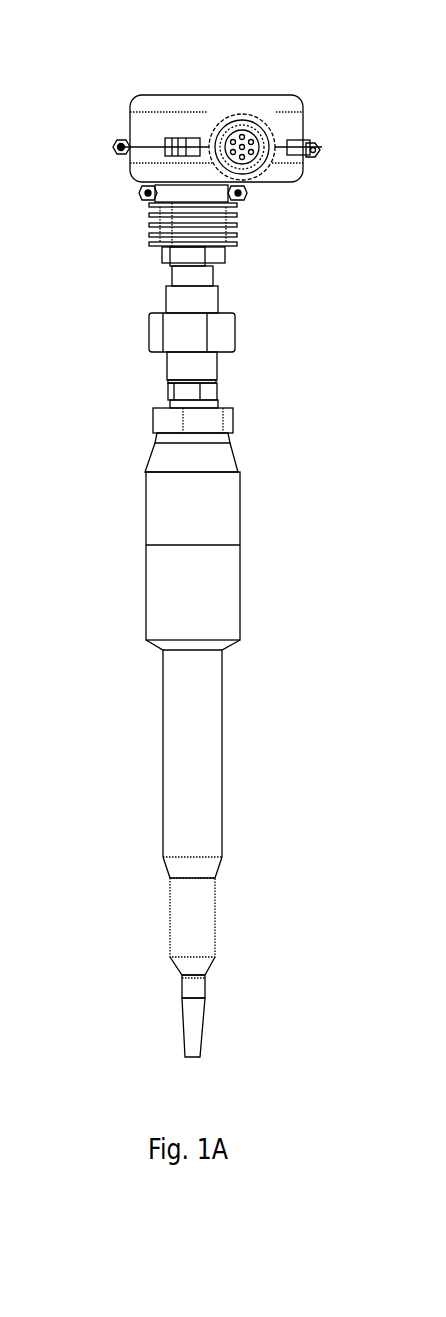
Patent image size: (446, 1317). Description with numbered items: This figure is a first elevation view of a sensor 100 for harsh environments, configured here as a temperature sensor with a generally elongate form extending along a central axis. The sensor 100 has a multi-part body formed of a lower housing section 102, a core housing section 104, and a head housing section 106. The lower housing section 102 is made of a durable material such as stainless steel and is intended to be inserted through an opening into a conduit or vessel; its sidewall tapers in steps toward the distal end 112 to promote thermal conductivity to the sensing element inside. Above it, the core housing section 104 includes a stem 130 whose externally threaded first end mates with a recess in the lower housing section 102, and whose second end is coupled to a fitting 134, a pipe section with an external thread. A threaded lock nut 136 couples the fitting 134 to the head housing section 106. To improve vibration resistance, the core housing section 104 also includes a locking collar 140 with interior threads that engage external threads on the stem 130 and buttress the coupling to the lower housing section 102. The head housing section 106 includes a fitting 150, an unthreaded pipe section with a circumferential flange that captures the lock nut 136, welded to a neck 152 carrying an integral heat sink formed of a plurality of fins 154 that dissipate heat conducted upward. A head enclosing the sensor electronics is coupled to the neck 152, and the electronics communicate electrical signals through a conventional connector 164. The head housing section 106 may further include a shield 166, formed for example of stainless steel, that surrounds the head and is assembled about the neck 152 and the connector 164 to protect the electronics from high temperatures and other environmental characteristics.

The sensor 100 is at (166, 62).
The lower housing section 102 is at (130, 545).
The core housing section 104 is at (130, 332).
The head housing section 106 is at (130, 95).
The distal end 112 is at (203, 1053).
The stem 130 is at (217, 396).
The fitting 134 is at (217, 365).
The lock nut 136 is at (236, 340).
The locking collar 140 is at (240, 484).
The fitting 150 is at (218, 301).
The neck 152 is at (226, 259).
The fins 154 is at (237, 228).
The connector 164 is at (260, 170).
The shield 166 is at (258, 95).